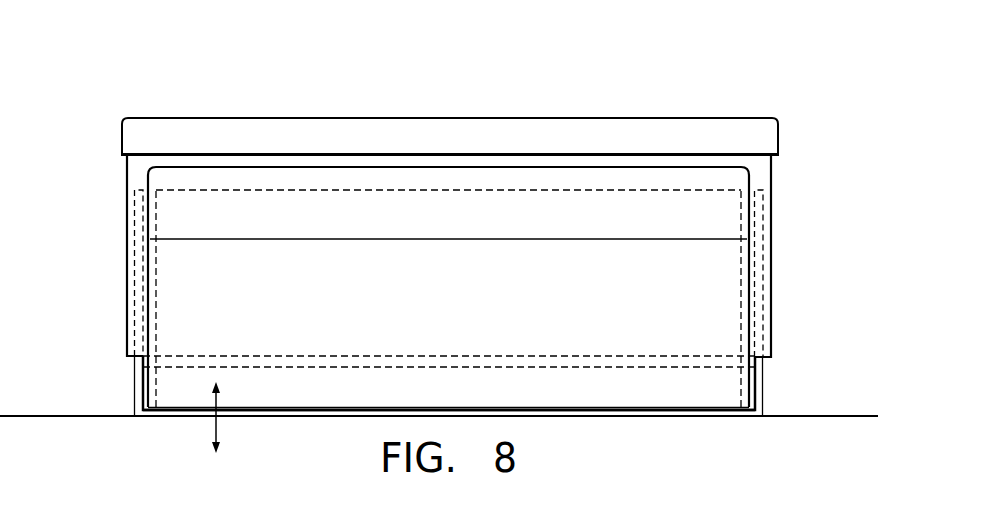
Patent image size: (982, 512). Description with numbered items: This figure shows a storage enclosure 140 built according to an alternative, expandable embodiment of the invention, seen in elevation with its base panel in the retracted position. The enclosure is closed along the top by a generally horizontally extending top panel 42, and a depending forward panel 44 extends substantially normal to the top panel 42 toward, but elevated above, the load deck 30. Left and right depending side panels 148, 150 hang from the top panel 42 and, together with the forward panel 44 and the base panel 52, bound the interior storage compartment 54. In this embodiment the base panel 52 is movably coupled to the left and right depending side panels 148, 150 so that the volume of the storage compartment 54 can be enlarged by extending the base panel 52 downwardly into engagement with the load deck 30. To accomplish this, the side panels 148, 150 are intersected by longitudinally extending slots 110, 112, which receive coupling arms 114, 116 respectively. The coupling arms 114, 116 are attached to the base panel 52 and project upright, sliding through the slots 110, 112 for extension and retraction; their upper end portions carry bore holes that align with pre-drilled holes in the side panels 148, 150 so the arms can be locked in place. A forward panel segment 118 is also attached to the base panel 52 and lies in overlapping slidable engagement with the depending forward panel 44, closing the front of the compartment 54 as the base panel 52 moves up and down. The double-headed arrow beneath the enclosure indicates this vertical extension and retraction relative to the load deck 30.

The storage enclosure 140 is at (540, 66).
The top panel 42 is at (393, 118).
The depending forward panel 44 is at (220, 178).
The left depending side panel 148 is at (127, 182).
The right depending side panel 150 is at (771, 182).
The longitudinally extending slot 110 is at (137, 216).
The longitudinally extending slot 112 is at (760, 218).
The coupling arm 114 is at (128, 262).
The coupling arm 116 is at (772, 263).
The interior storage compartment 54 is at (462, 305).
The forward panel segment 118 is at (610, 257).
The base panel 52 is at (642, 411).
The load deck 30 is at (856, 408).